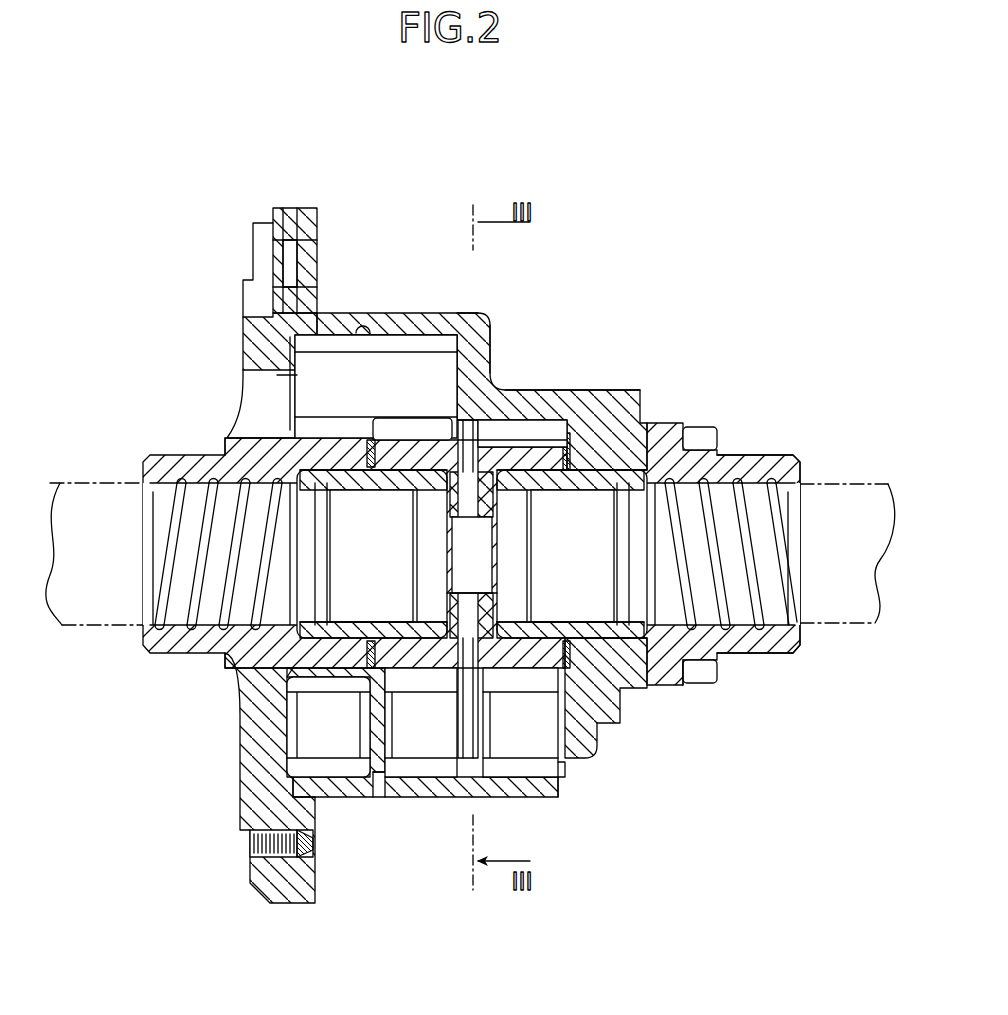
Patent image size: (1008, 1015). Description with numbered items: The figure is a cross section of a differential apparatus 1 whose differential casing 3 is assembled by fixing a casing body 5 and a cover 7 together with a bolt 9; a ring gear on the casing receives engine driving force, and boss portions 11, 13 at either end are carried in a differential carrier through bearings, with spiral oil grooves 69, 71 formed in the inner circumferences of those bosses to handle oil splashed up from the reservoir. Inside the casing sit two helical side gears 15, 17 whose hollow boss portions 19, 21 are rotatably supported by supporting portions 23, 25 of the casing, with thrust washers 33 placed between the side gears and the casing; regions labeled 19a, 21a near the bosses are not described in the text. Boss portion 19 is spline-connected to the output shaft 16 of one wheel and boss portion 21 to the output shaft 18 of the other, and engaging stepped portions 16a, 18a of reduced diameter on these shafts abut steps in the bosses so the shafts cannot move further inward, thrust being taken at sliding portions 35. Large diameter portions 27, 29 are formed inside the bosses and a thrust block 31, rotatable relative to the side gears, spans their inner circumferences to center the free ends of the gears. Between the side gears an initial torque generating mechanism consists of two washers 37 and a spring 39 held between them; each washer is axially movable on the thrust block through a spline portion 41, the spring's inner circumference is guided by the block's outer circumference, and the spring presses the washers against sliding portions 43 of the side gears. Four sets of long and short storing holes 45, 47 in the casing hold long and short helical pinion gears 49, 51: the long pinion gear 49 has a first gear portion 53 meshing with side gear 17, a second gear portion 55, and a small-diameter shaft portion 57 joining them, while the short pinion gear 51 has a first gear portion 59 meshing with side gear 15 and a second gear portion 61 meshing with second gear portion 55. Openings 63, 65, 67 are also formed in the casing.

The differential apparatus 1 is at (667, 268).
The differential casing 3 is at (298, 193).
The casing body 5 is at (585, 388).
The cover 7 is at (250, 258).
The bolt 9 is at (320, 855).
The boss portion 11 is at (157, 455).
The boss portion 13 is at (745, 455).
The side gear 15 is at (397, 668).
The output shaft 16 is at (80, 480).
The engaging stepped portion 16a is at (226, 680).
The side gear 17 is at (557, 432).
The output shaft 18 is at (832, 480).
The engaging stepped portion 18a is at (655, 648).
The hollow boss portion 19 is at (345, 483).
The hub shoulder 19a is at (226, 455).
The hollow boss portion 21 is at (600, 483).
The snap ring 21a is at (655, 445).
The supporting portion 23 is at (352, 622).
The supporting portion 25 is at (590, 622).
The large diameter portion 27 is at (450, 607).
The large diameter portion 29 is at (503, 622).
The thrust block 31 is at (503, 430).
The thrust washers 33 is at (382, 482).
The sliding portions 35 is at (447, 506).
The washers 37 is at (468, 320).
The spring 39 is at (497, 350).
The spline portion 41 is at (487, 613).
The sliding portions 43 is at (448, 690).
The long storing hole 45 is at (393, 777).
The short storing hole 47 is at (380, 318).
The long pinion gear 49 is at (568, 792).
The short pinion gear 51 is at (462, 315).
The first gear portion 53 is at (525, 770).
The second gear portion 55 is at (350, 768).
The shaft portion 57 is at (390, 736).
The first gear portion 59 is at (418, 340).
The second gear portion 61 is at (332, 340).
The opening 63 is at (300, 375).
The opening 65 is at (447, 797).
The opening 67 is at (572, 767).
The spiral oil groove 69 is at (175, 520).
The spiral oil groove 71 is at (765, 528).